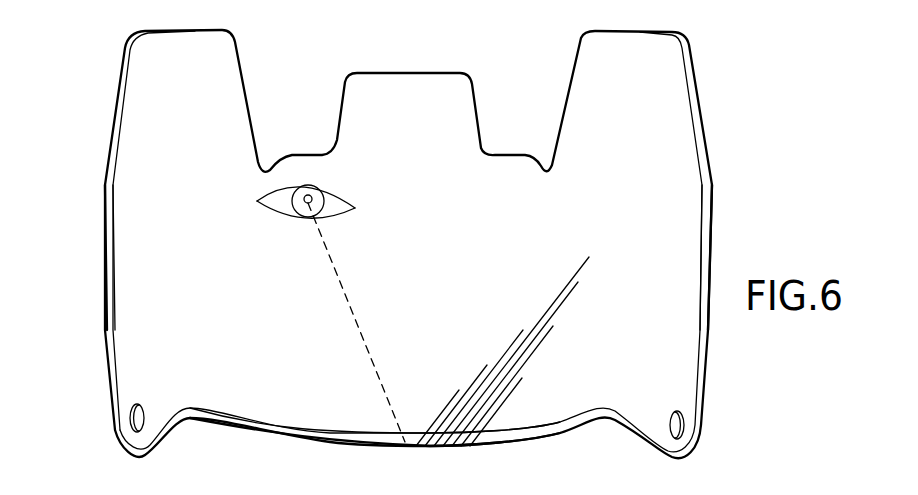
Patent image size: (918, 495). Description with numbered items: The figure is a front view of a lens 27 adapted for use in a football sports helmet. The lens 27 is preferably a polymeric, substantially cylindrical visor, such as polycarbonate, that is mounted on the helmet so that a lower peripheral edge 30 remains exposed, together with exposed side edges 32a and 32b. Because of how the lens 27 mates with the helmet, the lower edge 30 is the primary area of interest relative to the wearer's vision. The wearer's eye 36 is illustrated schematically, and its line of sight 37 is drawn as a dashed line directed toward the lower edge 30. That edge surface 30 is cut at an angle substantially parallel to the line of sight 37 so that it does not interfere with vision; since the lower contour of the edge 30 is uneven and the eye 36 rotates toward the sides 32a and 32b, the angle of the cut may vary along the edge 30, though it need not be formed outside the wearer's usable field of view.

The lens 27 is at (667, 117).
The lower exposed peripheral edge 30 is at (288, 432).
The exposed side edge 32a is at (710, 213).
The exposed side edge 32b is at (106, 226).
The wearer's eye 36 is at (338, 192).
The line of sight 37 is at (350, 307).